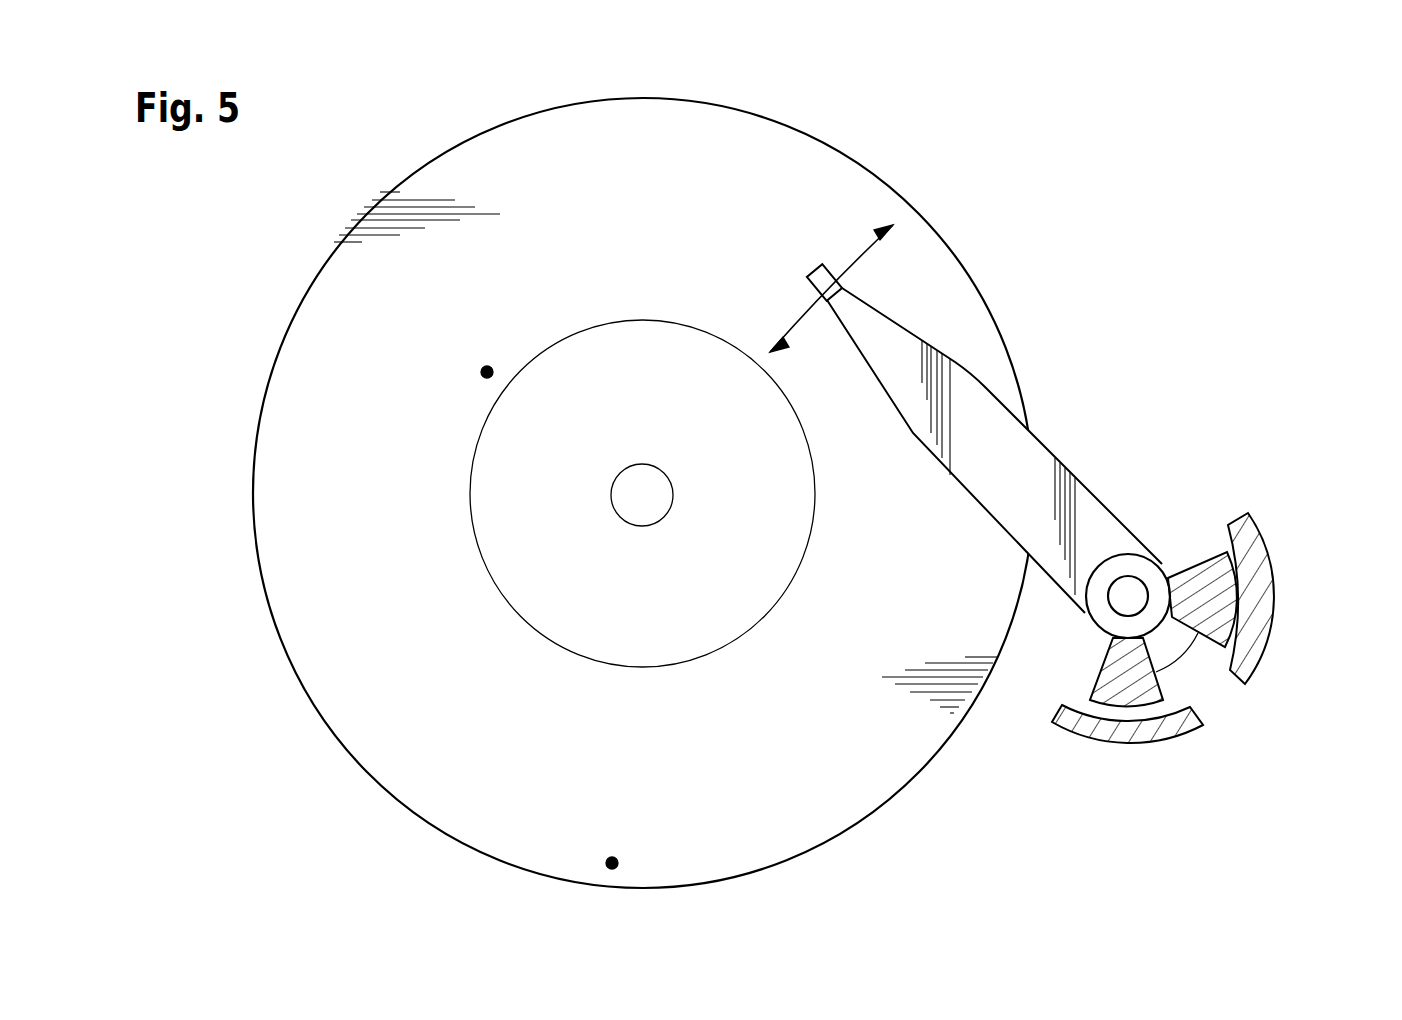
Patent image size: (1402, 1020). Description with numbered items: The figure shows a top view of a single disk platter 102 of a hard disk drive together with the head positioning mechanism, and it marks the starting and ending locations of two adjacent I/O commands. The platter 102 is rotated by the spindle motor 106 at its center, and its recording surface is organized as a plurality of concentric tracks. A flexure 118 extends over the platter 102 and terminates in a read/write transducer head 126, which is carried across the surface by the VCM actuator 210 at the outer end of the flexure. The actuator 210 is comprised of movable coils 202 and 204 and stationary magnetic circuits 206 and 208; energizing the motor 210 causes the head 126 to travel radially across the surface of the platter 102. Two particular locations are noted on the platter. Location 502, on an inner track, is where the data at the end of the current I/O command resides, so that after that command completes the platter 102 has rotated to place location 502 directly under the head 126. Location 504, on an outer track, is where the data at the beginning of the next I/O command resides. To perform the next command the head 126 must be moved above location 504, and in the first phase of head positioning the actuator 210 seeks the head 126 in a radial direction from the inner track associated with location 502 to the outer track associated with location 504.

The disk platter 102 is at (362, 770).
The spindle motor 106 is at (642, 516).
The flexure 118 is at (1072, 482).
The read/write transducer head 126 is at (818, 268).
The movable coil 202 is at (1186, 573).
The movable coil 204 is at (1100, 682).
The stationary magnetic circuit 206 is at (1131, 732).
The stationary magnetic circuit 208 is at (1262, 598).
The VCM actuator 210 is at (980, 807).
The location 502 is at (494, 352).
The location 504 is at (640, 857).